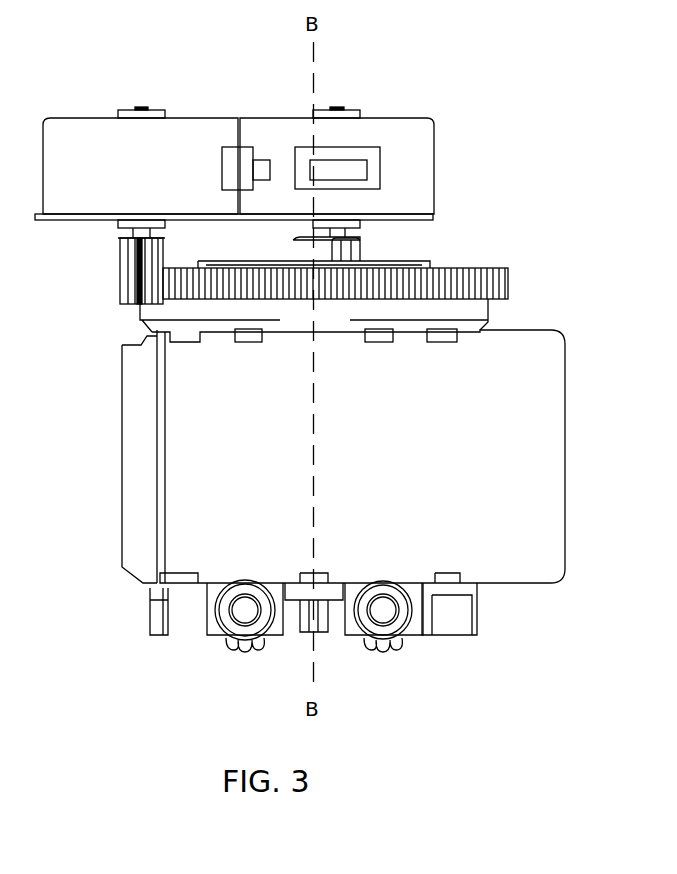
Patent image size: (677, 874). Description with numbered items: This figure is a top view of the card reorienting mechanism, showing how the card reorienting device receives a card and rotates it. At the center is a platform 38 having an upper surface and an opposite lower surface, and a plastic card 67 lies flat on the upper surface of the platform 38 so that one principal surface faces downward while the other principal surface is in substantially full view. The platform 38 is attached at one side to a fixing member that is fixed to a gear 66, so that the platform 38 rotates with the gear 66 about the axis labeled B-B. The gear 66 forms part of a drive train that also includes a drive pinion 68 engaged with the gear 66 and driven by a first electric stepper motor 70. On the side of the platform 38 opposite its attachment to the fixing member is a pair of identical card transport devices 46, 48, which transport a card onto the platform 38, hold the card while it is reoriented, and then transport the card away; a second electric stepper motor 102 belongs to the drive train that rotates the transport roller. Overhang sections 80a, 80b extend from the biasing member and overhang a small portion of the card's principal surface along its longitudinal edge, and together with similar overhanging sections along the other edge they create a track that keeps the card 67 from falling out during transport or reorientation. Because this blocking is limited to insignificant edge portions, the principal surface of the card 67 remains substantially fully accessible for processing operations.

The platform 38 is at (143, 488).
The card transport device 46 is at (231, 652).
The card transport device 48 is at (396, 652).
The gear 66 is at (493, 285).
The plastic card 67 is at (545, 443).
The drive pinion 68 is at (130, 272).
The first electric stepper motor 70 is at (198, 143).
The overhang section 80a is at (245, 337).
The overhang section 80b is at (382, 337).
The second electric stepper motor 102 is at (416, 165).